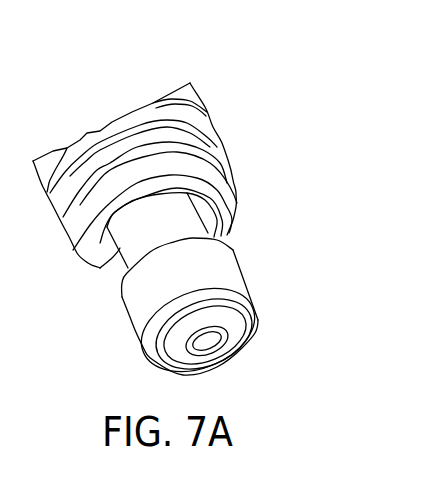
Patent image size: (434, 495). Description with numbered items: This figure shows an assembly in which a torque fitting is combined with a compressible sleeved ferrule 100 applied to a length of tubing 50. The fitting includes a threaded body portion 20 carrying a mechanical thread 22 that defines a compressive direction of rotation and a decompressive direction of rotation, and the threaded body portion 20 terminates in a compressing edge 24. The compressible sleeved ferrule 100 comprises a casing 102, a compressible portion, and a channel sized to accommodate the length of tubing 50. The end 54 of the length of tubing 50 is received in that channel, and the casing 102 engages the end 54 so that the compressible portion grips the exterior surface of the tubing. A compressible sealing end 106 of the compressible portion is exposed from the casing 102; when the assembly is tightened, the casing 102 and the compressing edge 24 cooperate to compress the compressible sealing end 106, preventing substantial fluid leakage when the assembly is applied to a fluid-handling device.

The threaded body portion 20 is at (156, 156).
The mechanical thread 22 is at (220, 146).
The compressing edge 24 is at (223, 213).
The length of tubing 50 is at (132, 248).
The compressible sleeved ferrule 100 is at (220, 301).
The casing 102 is at (128, 318).
The compressible sealing end 106 is at (257, 327).
The end of the length of tubing 54 is at (233, 343).